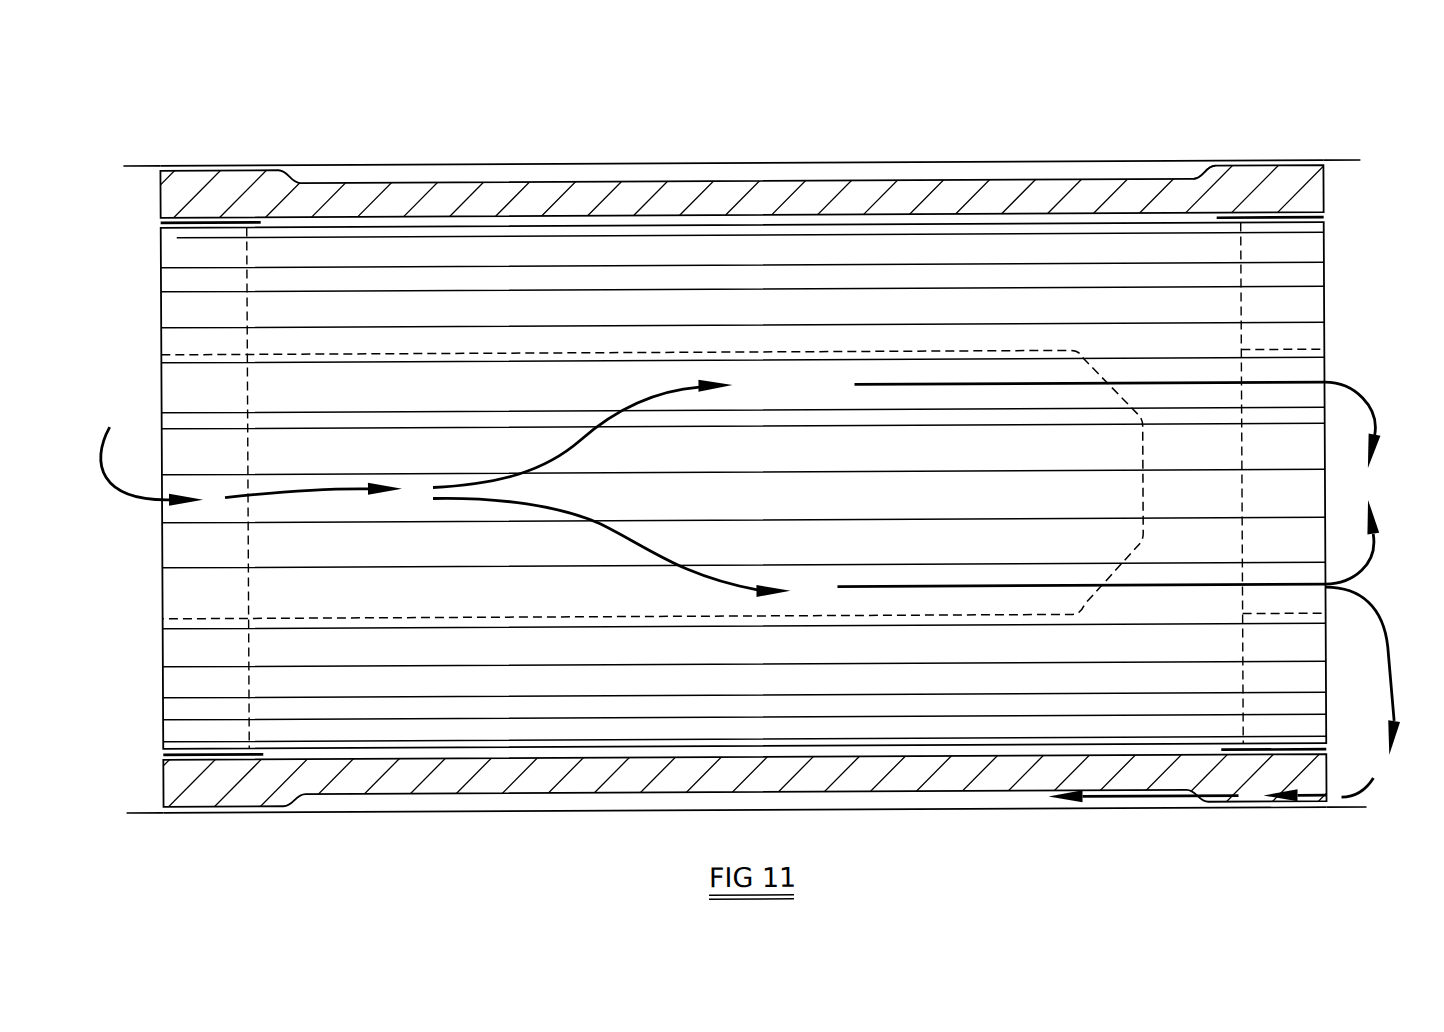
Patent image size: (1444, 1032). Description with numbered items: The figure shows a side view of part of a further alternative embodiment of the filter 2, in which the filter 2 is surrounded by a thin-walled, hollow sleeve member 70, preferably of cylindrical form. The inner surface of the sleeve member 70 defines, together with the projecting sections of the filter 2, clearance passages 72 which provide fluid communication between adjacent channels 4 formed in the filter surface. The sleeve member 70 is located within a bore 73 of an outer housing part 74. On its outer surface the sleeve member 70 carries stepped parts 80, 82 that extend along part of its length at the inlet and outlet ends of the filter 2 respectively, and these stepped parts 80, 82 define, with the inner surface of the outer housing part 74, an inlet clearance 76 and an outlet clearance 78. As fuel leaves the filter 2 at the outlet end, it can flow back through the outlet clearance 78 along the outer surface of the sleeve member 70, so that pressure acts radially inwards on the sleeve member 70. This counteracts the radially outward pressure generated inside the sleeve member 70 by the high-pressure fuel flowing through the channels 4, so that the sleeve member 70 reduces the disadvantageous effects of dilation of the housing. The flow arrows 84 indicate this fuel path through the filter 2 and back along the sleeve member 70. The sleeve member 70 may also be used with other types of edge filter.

The filter 2 is at (858, 204).
The channels 4 is at (1309, 305).
The sleeve member 70 is at (873, 794).
The clearance passages 72 is at (138, 220).
The bore 73 is at (686, 165).
The outer housing part 74 is at (553, 831).
The inlet clearance 76 is at (134, 163).
The outlet clearance 78 is at (1351, 163).
The stepped part 80 is at (314, 171).
The stepped part 82 is at (1174, 174).
The fluid flow path 84 is at (1356, 366).